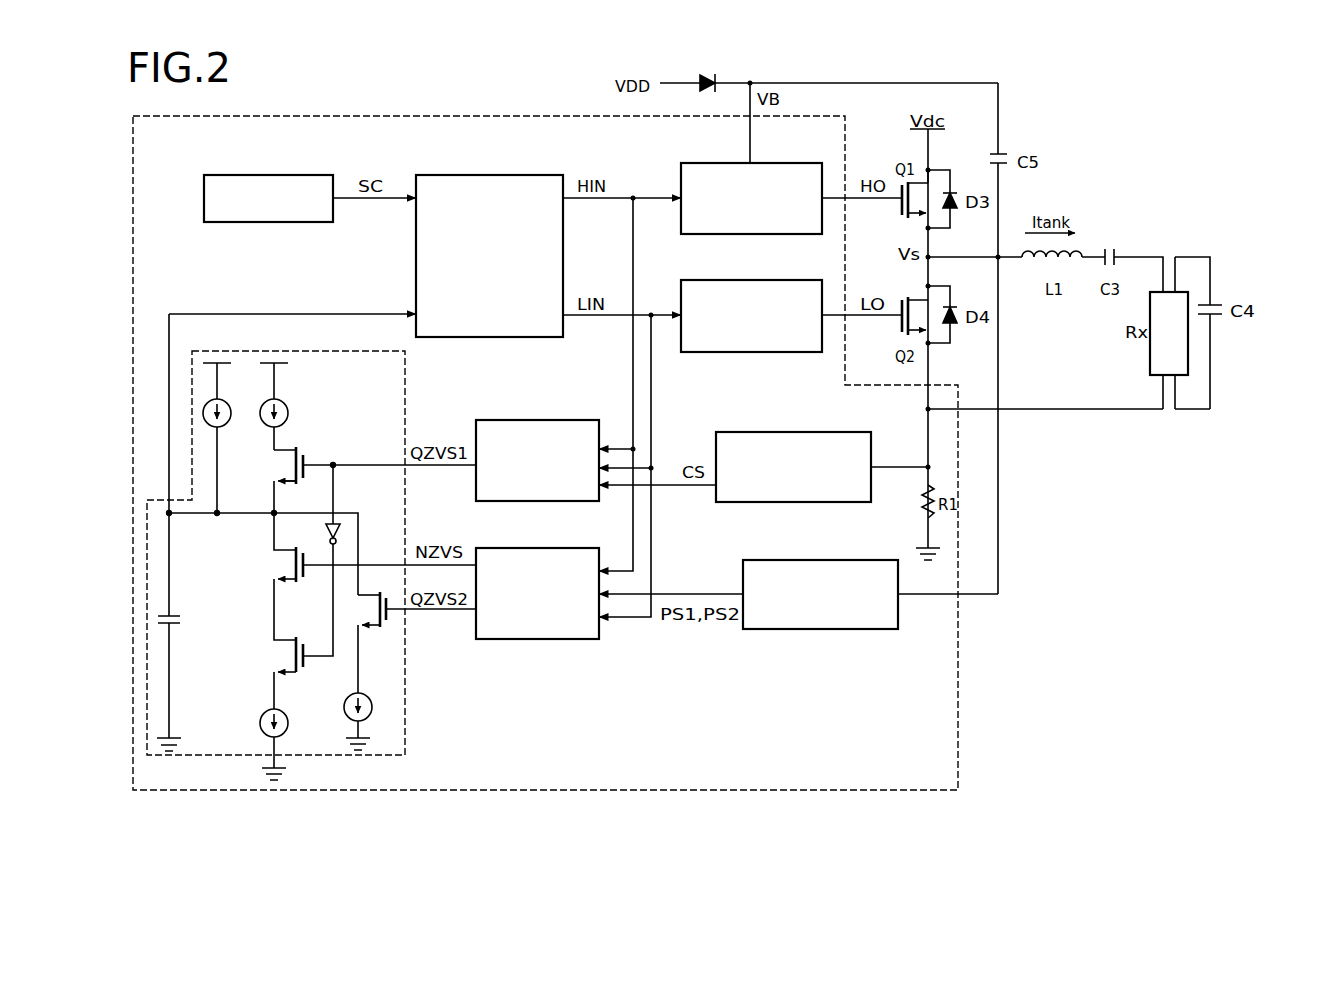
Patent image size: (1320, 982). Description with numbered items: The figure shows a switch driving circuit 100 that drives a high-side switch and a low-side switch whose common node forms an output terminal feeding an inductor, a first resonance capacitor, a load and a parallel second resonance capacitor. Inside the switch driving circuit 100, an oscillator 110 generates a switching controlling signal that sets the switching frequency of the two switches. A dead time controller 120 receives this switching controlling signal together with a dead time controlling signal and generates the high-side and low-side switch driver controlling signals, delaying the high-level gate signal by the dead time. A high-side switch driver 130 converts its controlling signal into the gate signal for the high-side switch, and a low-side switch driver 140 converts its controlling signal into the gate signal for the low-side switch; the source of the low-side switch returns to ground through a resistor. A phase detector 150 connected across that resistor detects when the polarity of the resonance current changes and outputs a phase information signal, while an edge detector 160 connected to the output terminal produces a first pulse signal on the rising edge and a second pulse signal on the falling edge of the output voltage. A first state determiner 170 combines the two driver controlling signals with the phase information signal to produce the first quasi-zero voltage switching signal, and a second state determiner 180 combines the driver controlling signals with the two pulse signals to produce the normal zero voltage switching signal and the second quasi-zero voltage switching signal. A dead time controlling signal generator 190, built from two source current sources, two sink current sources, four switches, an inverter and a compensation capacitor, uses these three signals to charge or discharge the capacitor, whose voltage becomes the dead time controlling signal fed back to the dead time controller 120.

The switch driving circuit 100 is at (388, 116).
The oscillator 110 is at (279, 175).
The dead time controller 120 is at (497, 175).
The high-side switch driver 130 is at (704, 163).
The low-side switch driver 140 is at (758, 280).
The phase detector 150 is at (800, 432).
The edge detector 160 is at (832, 560).
The first state determiner 170 is at (549, 420).
The second state determiner 180 is at (549, 548).
The dead time controlling signal generator 190 is at (406, 377).